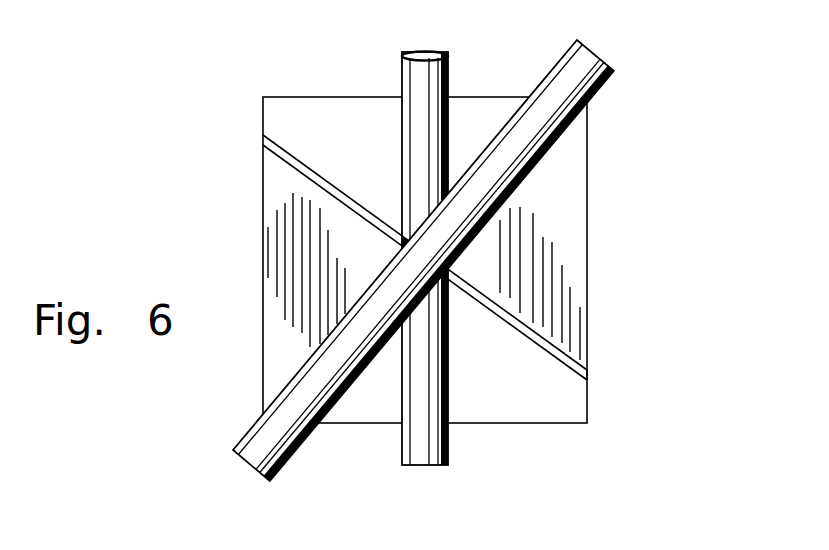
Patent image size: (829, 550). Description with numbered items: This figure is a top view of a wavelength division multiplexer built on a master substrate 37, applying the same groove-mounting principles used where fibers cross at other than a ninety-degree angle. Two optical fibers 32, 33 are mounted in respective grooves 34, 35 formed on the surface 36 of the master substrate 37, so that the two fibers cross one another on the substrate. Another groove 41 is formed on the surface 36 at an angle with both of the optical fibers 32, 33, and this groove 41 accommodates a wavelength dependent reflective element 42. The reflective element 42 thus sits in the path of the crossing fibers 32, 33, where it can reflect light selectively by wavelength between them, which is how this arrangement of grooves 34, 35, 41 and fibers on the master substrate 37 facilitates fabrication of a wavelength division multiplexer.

The optical fiber 32 is at (440, 442).
The optical fiber 33 is at (431, 245).
The groove 34 is at (430, 389).
The groove 35 is at (325, 411).
The surface 36 is at (360, 147).
The master substrate 37 is at (596, 201).
The groove 41 is at (280, 153).
The wavelength dependent reflective element 42 is at (443, 271).